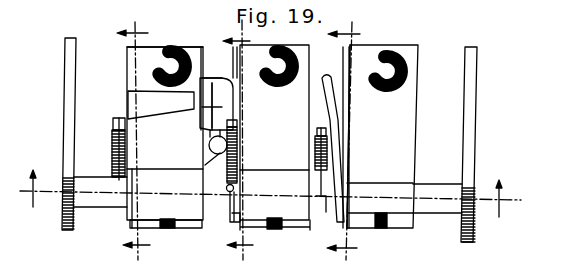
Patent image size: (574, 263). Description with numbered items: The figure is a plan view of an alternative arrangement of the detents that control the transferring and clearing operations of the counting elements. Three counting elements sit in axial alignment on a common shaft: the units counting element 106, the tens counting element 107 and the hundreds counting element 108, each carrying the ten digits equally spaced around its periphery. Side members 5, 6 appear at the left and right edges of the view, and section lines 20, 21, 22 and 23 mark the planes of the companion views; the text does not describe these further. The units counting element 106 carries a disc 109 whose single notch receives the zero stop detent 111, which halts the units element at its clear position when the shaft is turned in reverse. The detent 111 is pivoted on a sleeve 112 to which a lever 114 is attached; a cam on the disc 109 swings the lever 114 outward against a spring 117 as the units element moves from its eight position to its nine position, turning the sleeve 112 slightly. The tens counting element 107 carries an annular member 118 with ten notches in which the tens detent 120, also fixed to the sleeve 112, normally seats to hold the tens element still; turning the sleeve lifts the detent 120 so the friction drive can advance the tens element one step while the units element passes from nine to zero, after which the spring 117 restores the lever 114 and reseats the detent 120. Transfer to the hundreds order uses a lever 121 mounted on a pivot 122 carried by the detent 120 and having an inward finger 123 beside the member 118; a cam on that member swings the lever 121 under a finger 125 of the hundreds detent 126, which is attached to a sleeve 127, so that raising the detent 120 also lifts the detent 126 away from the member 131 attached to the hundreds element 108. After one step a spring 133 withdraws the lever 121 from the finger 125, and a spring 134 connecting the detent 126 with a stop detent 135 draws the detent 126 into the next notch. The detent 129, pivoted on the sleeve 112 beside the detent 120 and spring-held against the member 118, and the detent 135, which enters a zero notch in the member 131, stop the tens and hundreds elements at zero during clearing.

The left toothed rack bar 5 is at (65, 88).
The right toothed rack bar 6 is at (477, 125).
The section line 20 is at (264, 199).
The section line 21 is at (352, 141).
The section line 22 is at (247, 140).
The section line 23 is at (142, 141).
The units counting element 106 is at (407, 110).
The tens counting element 107 is at (309, 60).
The hundreds counting element 108 is at (145, 66).
The disc 109 is at (354, 58).
The zero stop detent 111 is at (332, 202).
The sleeve 112 is at (315, 214).
The lever 114 is at (326, 131).
The spring 117 is at (318, 152).
The annular member 118 is at (233, 60).
The tens detent 120 is at (228, 130).
The lever 121 is at (222, 110).
The pivot 122 is at (223, 158).
The finger 123 is at (223, 85).
The finger 125 is at (158, 100).
The hundreds detent 126 is at (112, 165).
The sleeve 127 is at (150, 198).
The detent 129 is at (238, 208).
The member 131 is at (127, 47).
The spring 133 is at (227, 190).
The spring 134 is at (114, 151).
The stop detent 135 is at (138, 182).